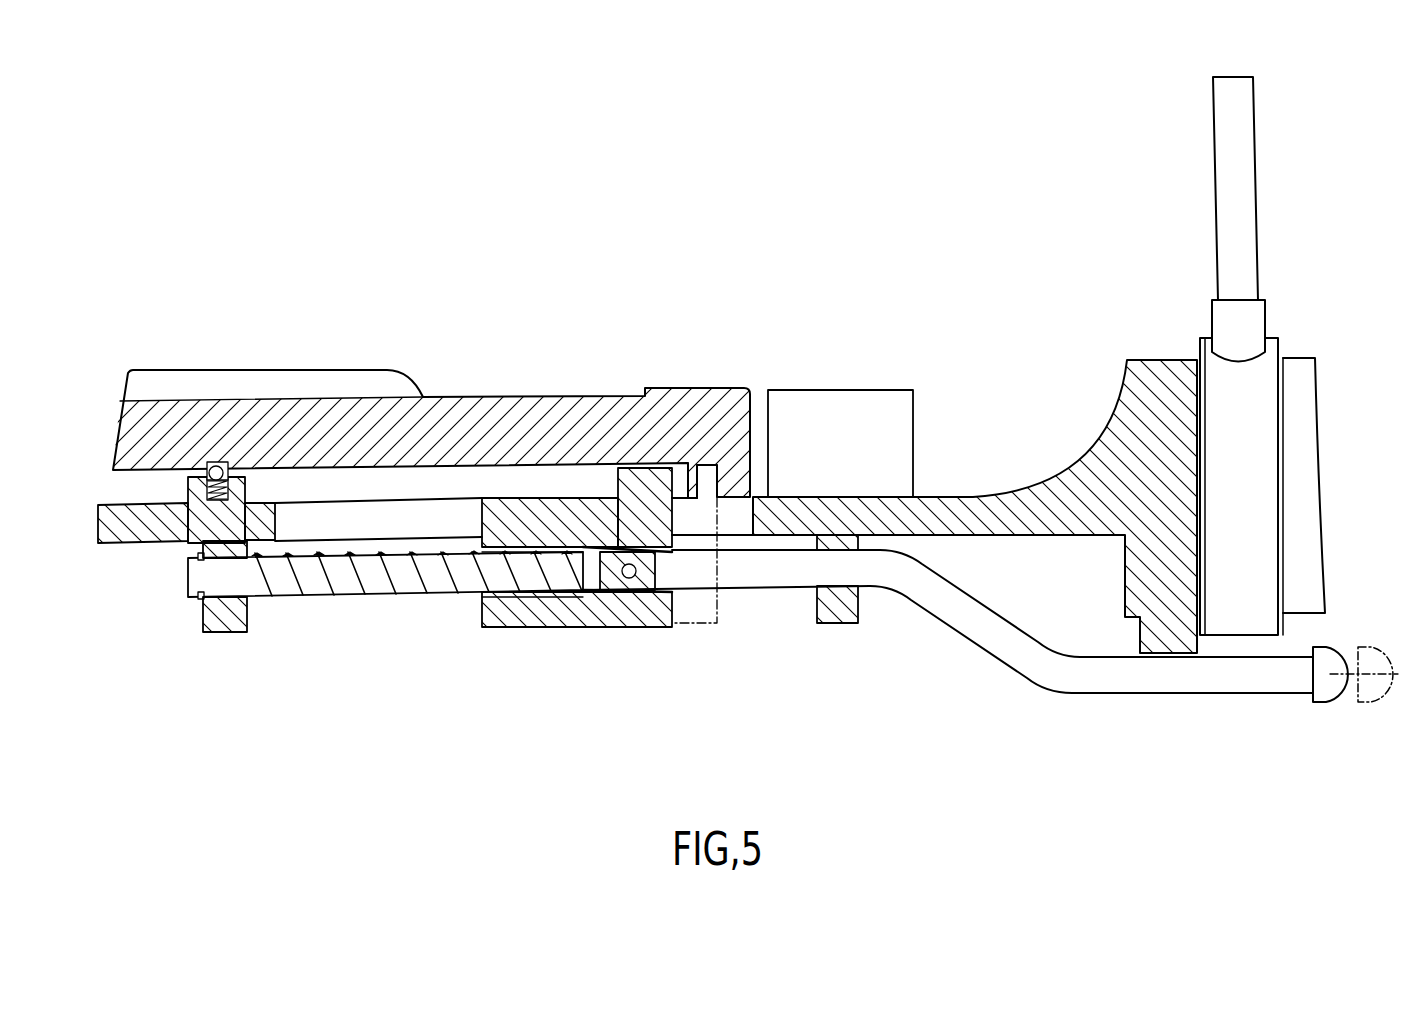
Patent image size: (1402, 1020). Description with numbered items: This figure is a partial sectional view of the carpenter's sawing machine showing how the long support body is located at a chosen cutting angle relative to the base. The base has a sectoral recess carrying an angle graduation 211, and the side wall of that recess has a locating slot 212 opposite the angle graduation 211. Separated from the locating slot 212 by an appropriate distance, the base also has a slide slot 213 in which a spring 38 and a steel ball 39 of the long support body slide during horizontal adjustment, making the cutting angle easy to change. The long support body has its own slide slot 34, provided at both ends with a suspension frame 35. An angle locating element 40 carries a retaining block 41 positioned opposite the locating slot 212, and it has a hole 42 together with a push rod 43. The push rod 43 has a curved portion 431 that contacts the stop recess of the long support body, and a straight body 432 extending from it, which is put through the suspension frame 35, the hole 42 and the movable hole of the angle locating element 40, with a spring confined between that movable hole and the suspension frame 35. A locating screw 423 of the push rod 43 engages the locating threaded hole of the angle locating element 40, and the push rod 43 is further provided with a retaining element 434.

The slide slot 34 is at (302, 532).
The suspension frame 35 is at (222, 630).
The spring 38 is at (173, 545).
The steel ball 39 is at (208, 470).
The angle locating element 40 is at (487, 637).
The retaining block 41 is at (615, 477).
The hole 42 is at (537, 597).
The push rod 43 is at (768, 598).
The angle graduation 211 is at (700, 388).
The locating slot 212 is at (692, 472).
The slide slot 213 is at (221, 473).
The locating screw 423 is at (633, 592).
The curved portion 431 is at (1101, 680).
The straight body 432 is at (347, 583).
The retaining element 434 is at (200, 602).